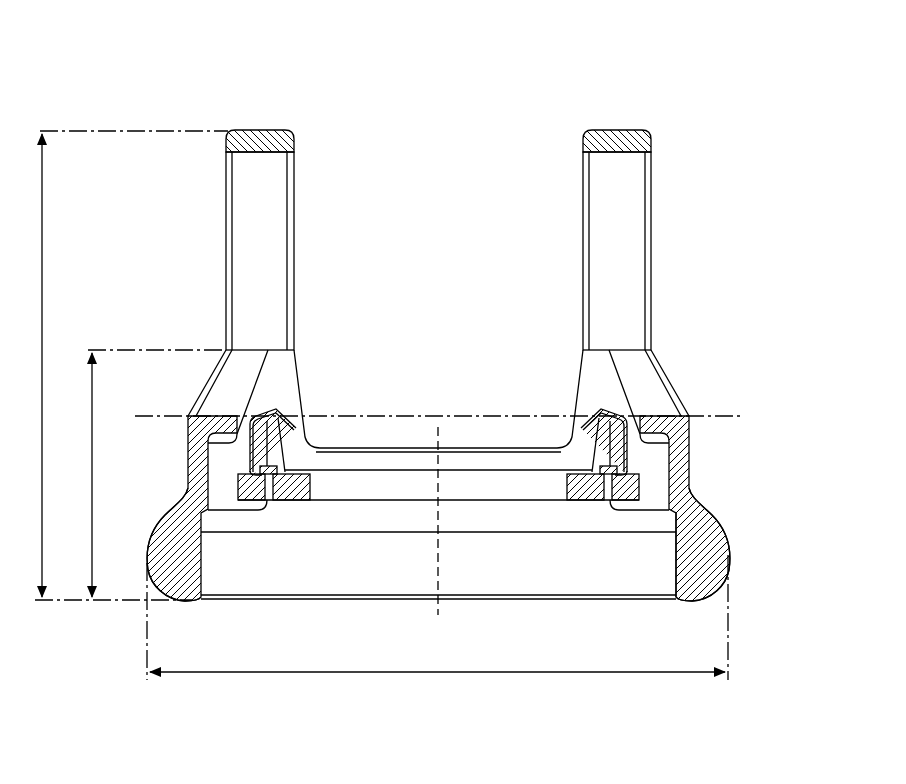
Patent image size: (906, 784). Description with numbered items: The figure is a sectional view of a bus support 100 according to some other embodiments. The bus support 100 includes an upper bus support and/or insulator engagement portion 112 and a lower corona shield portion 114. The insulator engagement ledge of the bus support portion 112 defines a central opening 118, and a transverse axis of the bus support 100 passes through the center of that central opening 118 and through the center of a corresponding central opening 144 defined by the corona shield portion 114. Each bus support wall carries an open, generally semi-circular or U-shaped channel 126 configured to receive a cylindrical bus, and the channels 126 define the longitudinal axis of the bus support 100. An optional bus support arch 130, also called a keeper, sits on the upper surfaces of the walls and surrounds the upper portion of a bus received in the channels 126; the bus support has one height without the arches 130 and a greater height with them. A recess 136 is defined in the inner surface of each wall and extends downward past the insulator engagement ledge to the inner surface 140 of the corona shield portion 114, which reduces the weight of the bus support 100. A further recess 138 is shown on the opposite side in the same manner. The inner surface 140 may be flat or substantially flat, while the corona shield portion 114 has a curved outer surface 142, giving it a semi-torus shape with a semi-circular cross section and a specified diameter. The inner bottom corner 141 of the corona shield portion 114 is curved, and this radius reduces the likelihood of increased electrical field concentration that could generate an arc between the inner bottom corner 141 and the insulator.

The bus support 100 is at (728, 100).
The bus support and/or insulator engagement portion 112 is at (694, 389).
The corona shield portion 114 is at (450, 579).
The central opening 118 is at (447, 496).
The channel 126 is at (652, 390).
The bus support arch 130 is at (623, 130).
The recess 136 is at (226, 492).
The spring element 138 is at (661, 479).
The inner surface 140 is at (677, 570).
The inner bottom corner 141 is at (195, 608).
The curved outer surface 142 is at (731, 549).
The central opening 144 is at (297, 583).